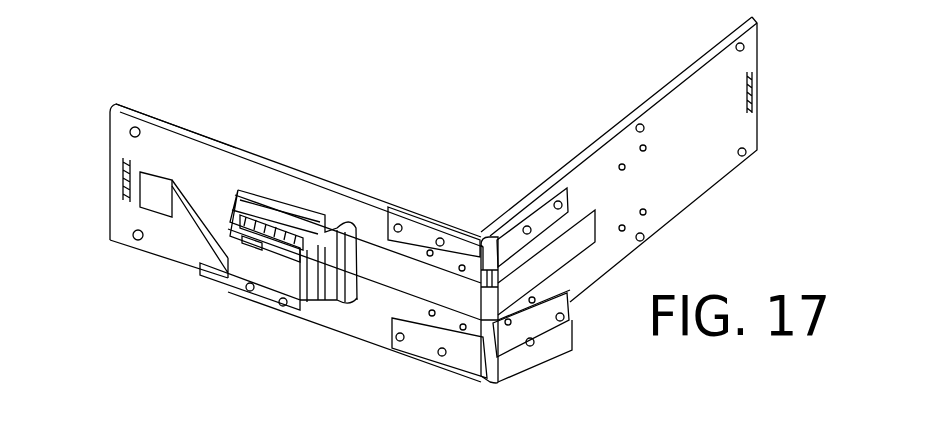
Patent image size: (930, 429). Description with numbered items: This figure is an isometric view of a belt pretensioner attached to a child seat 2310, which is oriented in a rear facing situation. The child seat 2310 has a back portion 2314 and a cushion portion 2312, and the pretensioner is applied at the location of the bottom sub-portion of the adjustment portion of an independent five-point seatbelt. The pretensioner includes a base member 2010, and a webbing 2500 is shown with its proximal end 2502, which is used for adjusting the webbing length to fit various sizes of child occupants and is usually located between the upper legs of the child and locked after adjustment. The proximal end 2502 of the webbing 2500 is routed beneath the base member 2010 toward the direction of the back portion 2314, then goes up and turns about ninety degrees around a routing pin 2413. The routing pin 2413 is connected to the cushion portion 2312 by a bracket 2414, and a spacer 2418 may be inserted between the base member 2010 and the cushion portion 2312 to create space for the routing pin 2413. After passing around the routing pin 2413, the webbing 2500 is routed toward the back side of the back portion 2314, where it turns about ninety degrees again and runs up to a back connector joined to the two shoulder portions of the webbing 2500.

The base member 2010 is at (253, 243).
The child seat 2310 is at (532, 160).
The cushion portion 2312 is at (358, 211).
The back portion 2314 is at (688, 128).
The routing pin 2413 is at (350, 270).
The bracket 2414 is at (284, 220).
The spacer 2418 is at (255, 190).
The webbing 2500 is at (437, 291).
The proximal end 2502 is at (156, 190).